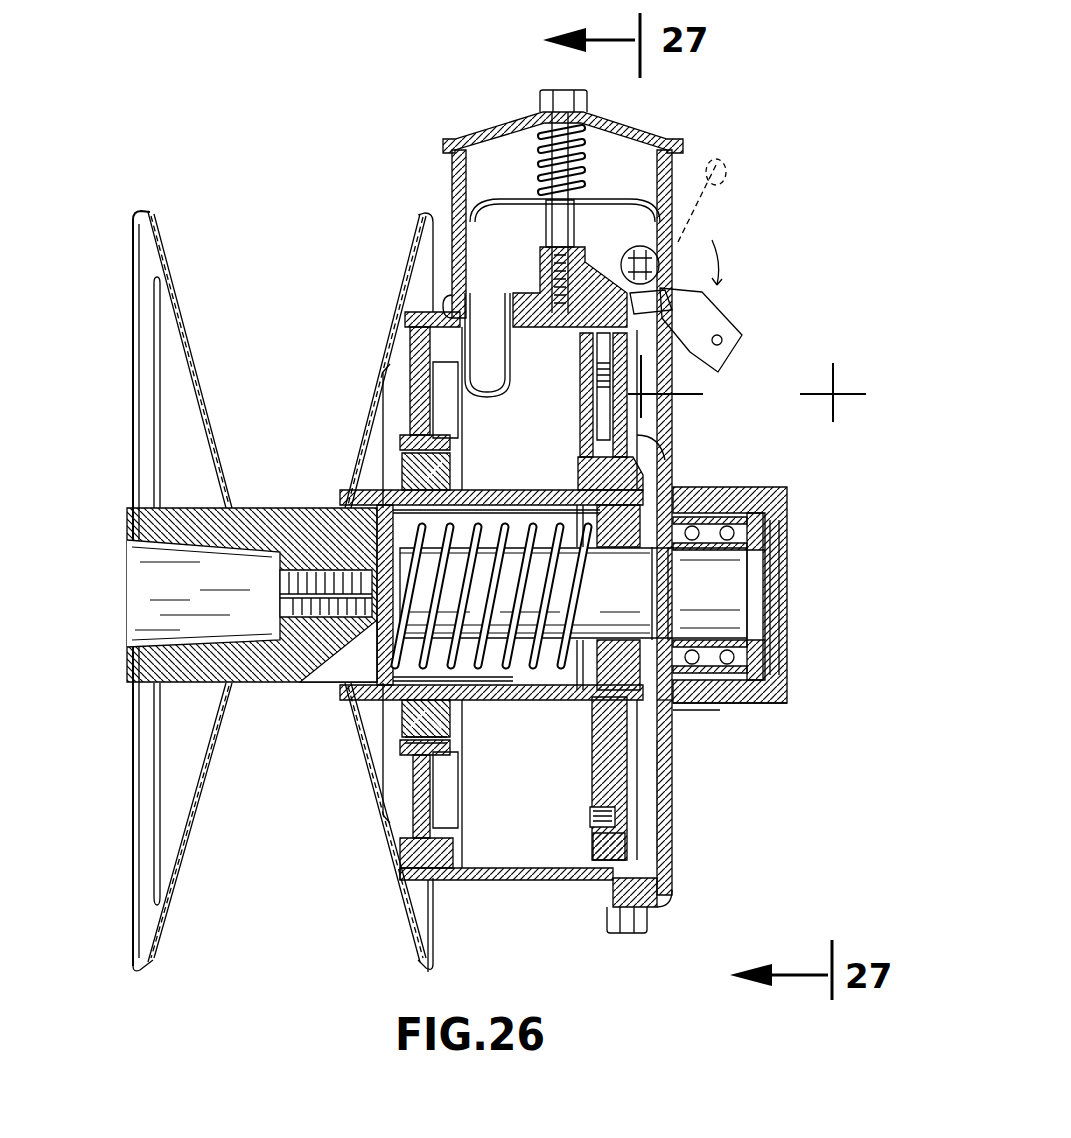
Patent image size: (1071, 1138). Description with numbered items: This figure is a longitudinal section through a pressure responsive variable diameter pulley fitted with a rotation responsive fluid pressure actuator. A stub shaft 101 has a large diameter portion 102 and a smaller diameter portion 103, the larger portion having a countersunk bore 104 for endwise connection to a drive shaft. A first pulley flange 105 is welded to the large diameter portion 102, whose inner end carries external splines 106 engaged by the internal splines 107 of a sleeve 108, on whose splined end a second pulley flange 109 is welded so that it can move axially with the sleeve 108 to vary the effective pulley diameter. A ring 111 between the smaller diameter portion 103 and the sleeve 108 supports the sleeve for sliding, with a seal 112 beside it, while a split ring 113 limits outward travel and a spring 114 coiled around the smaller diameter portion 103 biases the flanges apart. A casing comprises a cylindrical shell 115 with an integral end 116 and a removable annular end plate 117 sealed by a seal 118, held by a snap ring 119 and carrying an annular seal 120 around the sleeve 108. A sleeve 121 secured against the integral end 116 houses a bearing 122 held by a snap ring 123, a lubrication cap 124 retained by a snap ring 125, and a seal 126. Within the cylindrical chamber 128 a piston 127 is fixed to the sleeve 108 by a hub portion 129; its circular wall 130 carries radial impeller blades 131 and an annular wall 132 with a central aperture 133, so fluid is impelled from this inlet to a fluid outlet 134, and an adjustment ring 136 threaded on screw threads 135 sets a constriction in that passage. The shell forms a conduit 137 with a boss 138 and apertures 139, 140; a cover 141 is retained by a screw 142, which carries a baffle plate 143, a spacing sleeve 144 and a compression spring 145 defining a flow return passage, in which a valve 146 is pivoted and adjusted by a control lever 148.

The stub shaft 101 is at (283, 590).
The large diameter portion 102 is at (211, 622).
The smaller diameter portion 103 is at (468, 500).
The countersunk bore 104 is at (130, 645).
The first pulley flange 105 is at (233, 220).
The external splines 106 is at (343, 692).
The internal splines 107 is at (449, 722).
The sleeve 108 is at (590, 742).
The second pulley flange 109 is at (412, 258).
The ring 111 is at (660, 485).
The seal 112 is at (665, 700).
The split ring 113 is at (750, 614).
The spring 114 is at (546, 518).
The cylindrical shell 115 is at (470, 878).
The integral end 116 is at (670, 817).
The annular end plate 117 is at (413, 850).
The seal 118 is at (430, 893).
The snap ring 119 is at (405, 882).
The annular seal 120 is at (402, 465).
The sleeve 121 is at (722, 726).
The bearing 122 is at (762, 702).
The snap ring 123 is at (752, 537).
The lubrication cap 124 is at (770, 633).
The snap ring 125 is at (781, 513).
The seal 126 is at (768, 660).
The piston 127 is at (566, 793).
The cylindrical chamber 128 is at (535, 293).
The hub portion 129 is at (668, 456).
The circular wall 130 is at (628, 752).
The impeller blades 131 is at (606, 402).
The annular wall 132 is at (590, 825).
The central aperture 133 is at (580, 468).
The fluid outlet 134 is at (655, 893).
The screw threads 135 is at (640, 846).
The adjustment ring 136 is at (741, 337).
The conduit 137 is at (648, 188).
The boss 138 is at (582, 253).
The aperture 139 is at (450, 296).
The aperture 140 is at (690, 300).
The cover 141 is at (448, 140).
The screw 142 is at (544, 175).
The baffle plate 143 is at (577, 201).
The spacing sleeve 144 is at (552, 232).
The compression spring 145 is at (580, 176).
The valve 146 is at (735, 283).
The control lever 148 is at (719, 360).